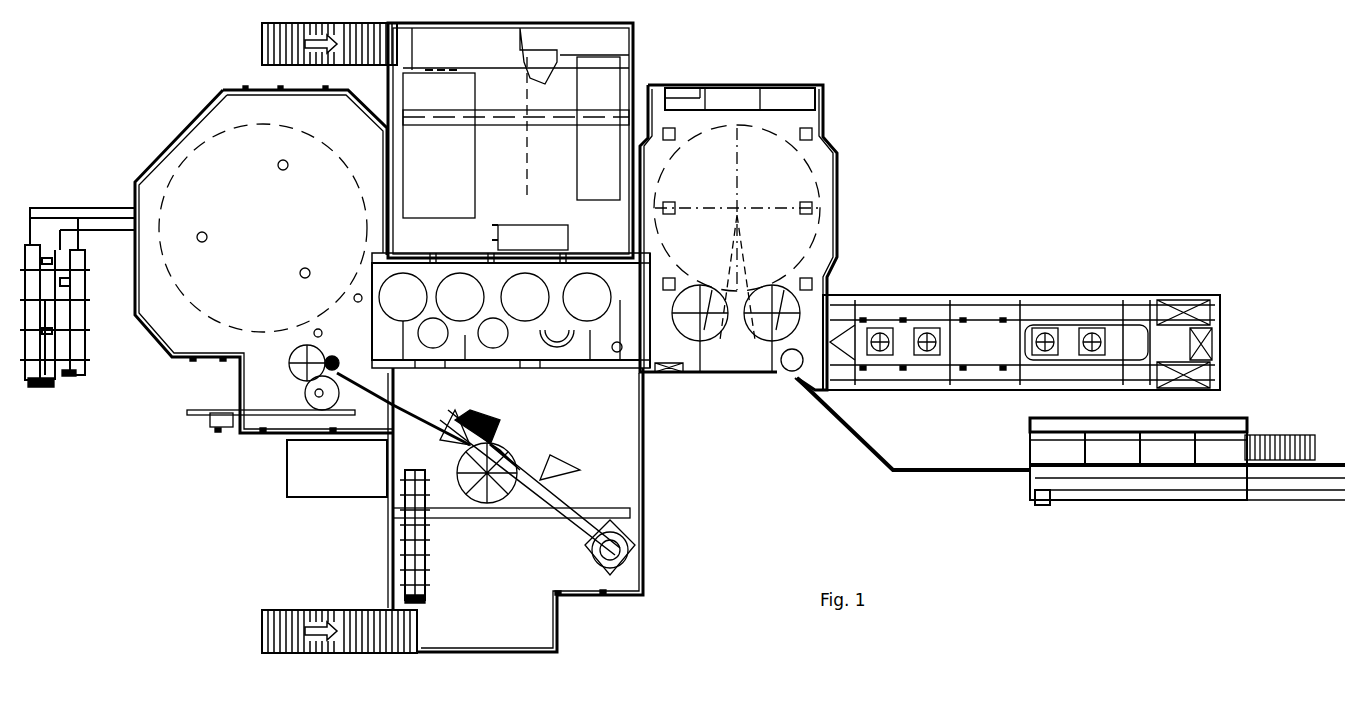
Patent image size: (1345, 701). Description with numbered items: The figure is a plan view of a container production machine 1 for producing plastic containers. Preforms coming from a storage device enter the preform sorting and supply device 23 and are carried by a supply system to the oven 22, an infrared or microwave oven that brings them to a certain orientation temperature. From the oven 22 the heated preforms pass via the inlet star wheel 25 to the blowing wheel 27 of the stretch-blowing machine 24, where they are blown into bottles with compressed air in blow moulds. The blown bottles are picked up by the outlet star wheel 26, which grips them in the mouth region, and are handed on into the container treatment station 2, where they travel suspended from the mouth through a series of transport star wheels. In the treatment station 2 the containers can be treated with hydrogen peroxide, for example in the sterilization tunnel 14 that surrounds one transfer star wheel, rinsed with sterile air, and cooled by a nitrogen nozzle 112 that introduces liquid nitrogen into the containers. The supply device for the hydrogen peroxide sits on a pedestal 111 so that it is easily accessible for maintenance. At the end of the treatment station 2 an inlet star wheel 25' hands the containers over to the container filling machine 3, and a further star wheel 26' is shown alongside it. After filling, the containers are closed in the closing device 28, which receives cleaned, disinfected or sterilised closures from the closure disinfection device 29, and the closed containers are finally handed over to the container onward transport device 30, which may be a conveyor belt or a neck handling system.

The container production machine 1 is at (893, 220).
The container treatment station 2 is at (567, 392).
The container filling machine 3 is at (162, 98).
The sterilization tunnel 14 is at (537, 373).
The oven 22 is at (1175, 297).
The preform sorting and supply device 23 is at (985, 518).
The stretch-blowing machine 24 is at (823, 104).
The inlet star wheel 25 is at (772, 372).
The inlet star wheel 25' is at (311, 181).
The outlet star wheel 26 is at (700, 368).
The closer 26' is at (307, 319).
The blowing wheel 27 is at (737, 232).
The closing device 28 is at (300, 348).
The closure disinfection device 29 is at (473, 530).
The container onward transport device 30 is at (195, 415).
The pedestal 111 is at (482, 53).
The nitrogen nozzle 112 is at (613, 376).